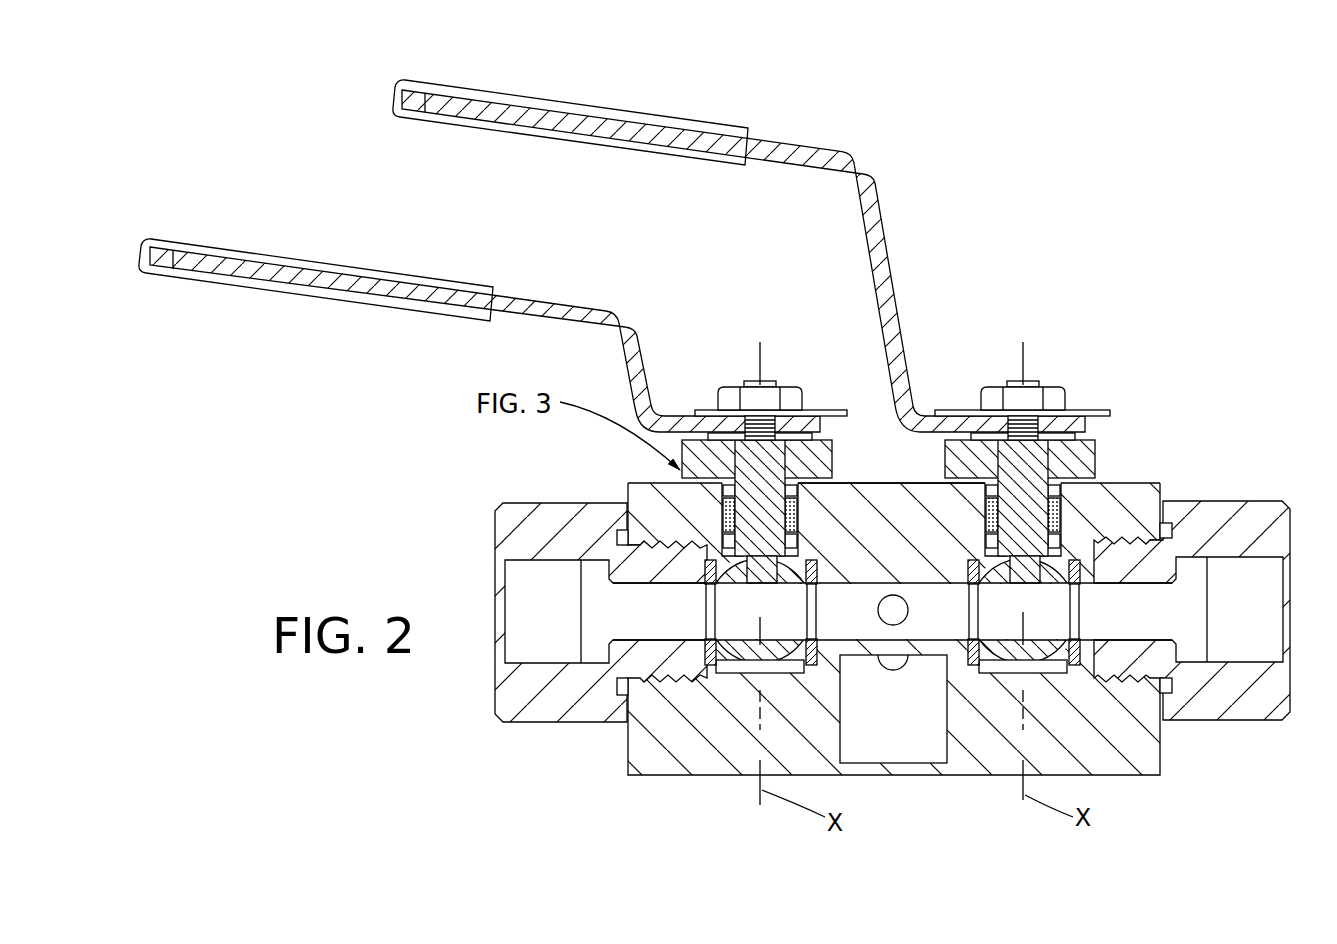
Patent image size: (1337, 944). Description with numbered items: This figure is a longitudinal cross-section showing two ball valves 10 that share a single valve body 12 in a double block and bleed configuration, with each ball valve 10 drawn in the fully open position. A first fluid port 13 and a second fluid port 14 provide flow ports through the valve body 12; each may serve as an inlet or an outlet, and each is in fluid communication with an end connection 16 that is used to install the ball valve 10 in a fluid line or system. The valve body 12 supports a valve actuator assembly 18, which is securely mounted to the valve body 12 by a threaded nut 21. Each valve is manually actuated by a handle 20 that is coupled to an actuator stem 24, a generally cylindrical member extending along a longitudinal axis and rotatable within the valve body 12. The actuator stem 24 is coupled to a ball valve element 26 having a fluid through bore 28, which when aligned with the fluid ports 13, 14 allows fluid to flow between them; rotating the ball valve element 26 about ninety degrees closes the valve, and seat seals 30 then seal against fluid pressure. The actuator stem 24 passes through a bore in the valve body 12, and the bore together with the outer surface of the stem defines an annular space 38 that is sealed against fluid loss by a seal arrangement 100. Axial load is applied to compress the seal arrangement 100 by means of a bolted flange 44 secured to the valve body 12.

The ball valve 10 is at (722, 456).
The valve body 12 is at (1130, 776).
The first fluid port 13 is at (700, 612).
The second fluid port 14 is at (908, 608).
The end connection 16 is at (504, 725).
The valve actuator assembly 18 is at (957, 388).
The handle 20 is at (533, 300).
The threaded nut 21 is at (727, 390).
The actuator stem 24 is at (1030, 384).
The ball valve element 26 is at (756, 662).
The fluid through bore 28 is at (968, 572).
The seat seals 30 is at (970, 567).
The annular space 38 is at (758, 511).
The bolted flange 44 is at (834, 447).
The seal arrangement 100 is at (806, 510).